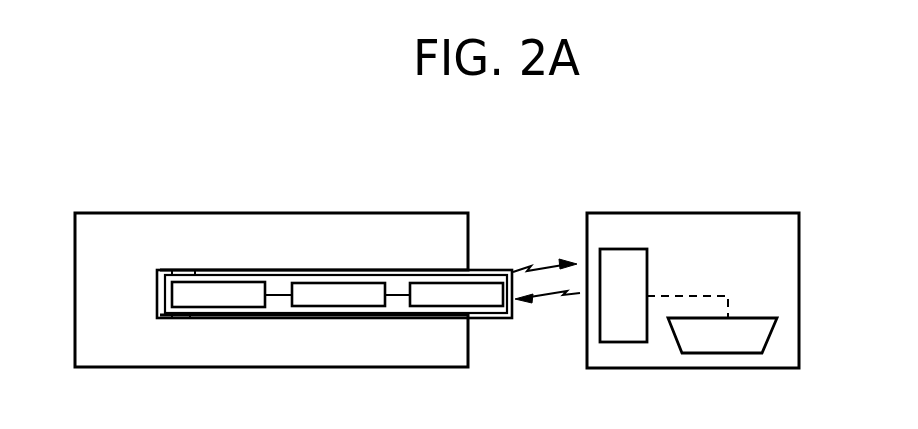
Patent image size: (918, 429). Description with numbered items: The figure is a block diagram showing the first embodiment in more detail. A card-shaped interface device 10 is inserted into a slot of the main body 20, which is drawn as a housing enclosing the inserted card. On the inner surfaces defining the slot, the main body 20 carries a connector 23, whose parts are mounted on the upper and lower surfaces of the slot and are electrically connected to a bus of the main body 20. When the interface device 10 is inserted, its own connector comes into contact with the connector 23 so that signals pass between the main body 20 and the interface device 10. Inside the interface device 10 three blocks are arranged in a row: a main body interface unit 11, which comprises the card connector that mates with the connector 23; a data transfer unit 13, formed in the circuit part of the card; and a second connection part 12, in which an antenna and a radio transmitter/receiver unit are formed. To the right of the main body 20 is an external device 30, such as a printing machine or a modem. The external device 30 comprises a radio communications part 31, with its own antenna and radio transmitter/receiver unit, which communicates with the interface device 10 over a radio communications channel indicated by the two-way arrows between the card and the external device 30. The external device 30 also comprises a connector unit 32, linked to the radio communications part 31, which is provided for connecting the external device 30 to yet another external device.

The interface device 10 is at (503, 318).
The main body interface unit 11 is at (218, 292).
The second connection part 12 is at (431, 292).
The data transfer unit 13 is at (333, 292).
The main body 20 is at (327, 213).
The connector 23 is at (176, 254).
The external device 30 is at (684, 213).
The radio communications part 31 is at (647, 276).
The connector unit 32 is at (748, 326).